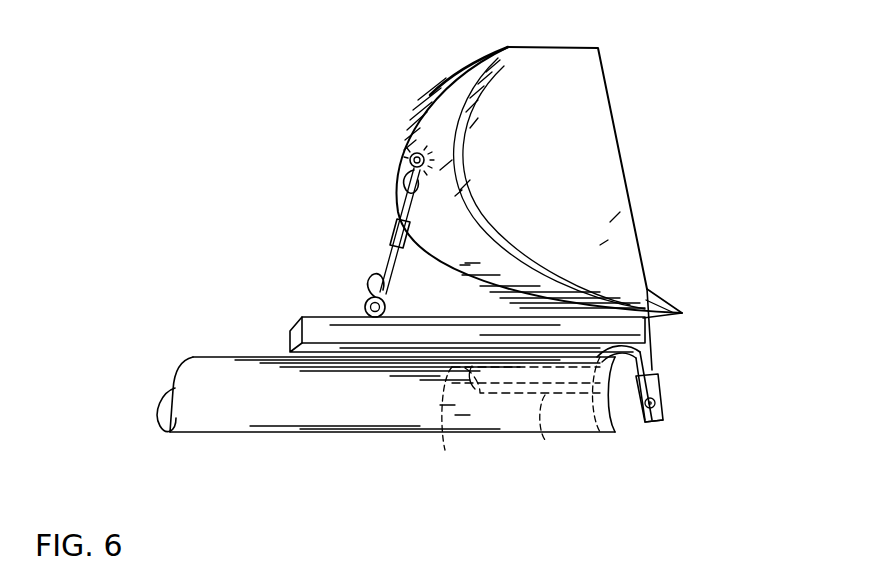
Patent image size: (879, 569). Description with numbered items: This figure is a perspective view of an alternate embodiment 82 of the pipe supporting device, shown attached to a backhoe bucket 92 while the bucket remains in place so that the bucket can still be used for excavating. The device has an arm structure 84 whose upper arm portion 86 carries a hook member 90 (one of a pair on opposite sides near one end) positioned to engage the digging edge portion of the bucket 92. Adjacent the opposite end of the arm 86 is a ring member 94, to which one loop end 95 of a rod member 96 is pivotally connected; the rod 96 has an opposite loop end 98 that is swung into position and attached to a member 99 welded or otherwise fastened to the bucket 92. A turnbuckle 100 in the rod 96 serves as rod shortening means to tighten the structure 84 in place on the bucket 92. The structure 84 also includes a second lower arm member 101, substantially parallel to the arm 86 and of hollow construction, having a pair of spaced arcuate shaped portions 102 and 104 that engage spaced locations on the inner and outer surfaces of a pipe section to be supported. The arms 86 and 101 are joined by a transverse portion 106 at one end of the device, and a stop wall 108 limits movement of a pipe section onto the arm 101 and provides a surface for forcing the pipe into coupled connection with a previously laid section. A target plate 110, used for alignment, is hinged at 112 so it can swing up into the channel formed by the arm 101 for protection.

The alternate embodiment 82 is at (665, 347).
The arm structure 84 is at (657, 365).
The arm portion 86 is at (472, 316).
The hook member 90 is at (683, 313).
The backhoe bucket 92 is at (557, 120).
The ring member 94 is at (364, 300).
The loop end 95 is at (373, 287).
The rod member 96 is at (385, 253).
The loop end 98 is at (405, 172).
The member 99 is at (414, 152).
The turnbuckle 100 is at (393, 225).
The lower arm member 101 is at (543, 440).
The arcuate shaped portion 102 is at (445, 450).
The arcuate shaped portion 104 is at (652, 374).
The transverse portion 106 is at (650, 342).
The stop wall 108 is at (598, 437).
The target plate 110 is at (660, 418).
The hinge 112 is at (670, 421).